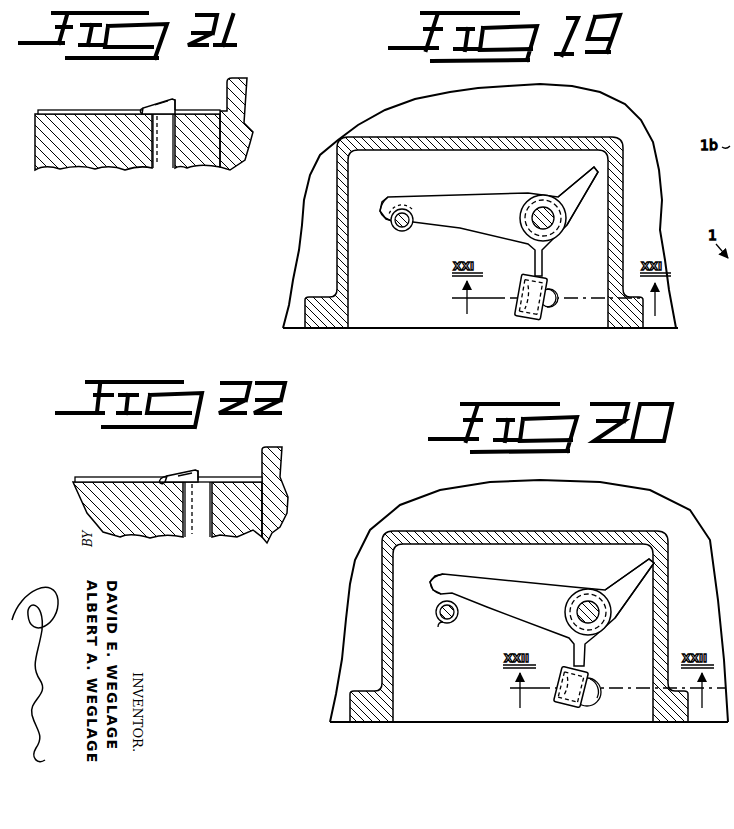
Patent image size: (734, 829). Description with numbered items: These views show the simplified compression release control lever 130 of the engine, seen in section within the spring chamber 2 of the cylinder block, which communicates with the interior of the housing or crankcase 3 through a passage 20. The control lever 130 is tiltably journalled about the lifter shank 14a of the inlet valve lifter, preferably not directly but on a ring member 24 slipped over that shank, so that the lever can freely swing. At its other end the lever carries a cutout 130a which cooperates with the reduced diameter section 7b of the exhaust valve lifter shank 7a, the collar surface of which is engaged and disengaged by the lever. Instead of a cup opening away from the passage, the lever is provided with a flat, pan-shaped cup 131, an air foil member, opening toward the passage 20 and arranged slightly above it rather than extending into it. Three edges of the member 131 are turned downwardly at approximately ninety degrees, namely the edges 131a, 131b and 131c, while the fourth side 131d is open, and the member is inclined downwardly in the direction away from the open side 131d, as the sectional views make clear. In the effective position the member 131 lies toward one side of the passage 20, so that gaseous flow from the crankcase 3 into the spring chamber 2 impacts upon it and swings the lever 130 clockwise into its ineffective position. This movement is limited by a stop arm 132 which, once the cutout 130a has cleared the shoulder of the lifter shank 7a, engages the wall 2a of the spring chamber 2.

In FIG. 19, the spring chamber 2 is at (400, 318).
In FIG. 20, the spring chamber 2 is at (529, 725).
In FIG. 19, the wall of spring chamber 2a is at (599, 208).
In FIG. 20, the wall of spring chamber 2a is at (519, 626).
In FIG. 21, the wall of spring chamber 2a is at (225, 82).
In FIG. 22, the wall of spring chamber 2a is at (263, 450).
In FIG. 21, the housing or crankcase 3 is at (103, 157).
In FIG. 22, the housing or crankcase 3 is at (157, 517).
In FIG. 19, the lifter shank 7a is at (395, 232).
In FIG. 20, the lifter shank 7a is at (425, 646).
In FIG. 19, the reduced diameter section 7b is at (405, 231).
In FIG. 20, the reduced diameter section 7b is at (455, 626).
In FIG. 19, the lifter shank 14a is at (540, 214).
In FIG. 20, the lifter shank 14a is at (588, 591).
In FIG. 19, the passage 20 is at (549, 307).
In FIG. 20, the passage 20 is at (595, 716).
In FIG. 21, the passage 20 is at (165, 160).
In FIG. 22, the passage 20 is at (202, 523).
In FIG. 19, the ring member 24 is at (563, 237).
In FIG. 20, the ring member 24 is at (604, 617).
In FIG. 19, the control lever 130 is at (455, 196).
In FIG. 20, the control lever 130 is at (530, 581).
In FIG. 21, the control lever 130 is at (67, 109).
In FIG. 22, the control lever 130 is at (92, 477).
In FIG. 19, the cutout 130a is at (396, 197).
In FIG. 20, the cutout 130a is at (436, 557).
In FIG. 19, the cup or air foil member 131 is at (509, 314).
In FIG. 20, the cup or air foil member 131 is at (550, 710).
In FIG. 21, the cup or air foil member 131 is at (169, 92).
In FIG. 22, the cup or air foil member 131 is at (187, 466).
In FIG. 19, the turned-down edge 131a is at (543, 278).
In FIG. 20, the turned-down edge 131a is at (597, 678).
In FIG. 21, the turned-down edge 131a is at (154, 104).
In FIG. 22, the turned-down edge 131a is at (178, 471).
In FIG. 19, the turned-down edge 131b is at (522, 282).
In FIG. 20, the turned-down edge 131b is at (545, 666).
In FIG. 21, the turned-down edge 131b is at (145, 110).
In FIG. 22, the turned-down edge 131b is at (163, 477).
In FIG. 19, the turned-down edge 131c is at (527, 318).
In FIG. 20, the turned-down edge 131c is at (564, 730).
In FIG. 19, the open side 131d is at (556, 294).
In FIG. 20, the open side 131d is at (631, 725).
In FIG. 21, the open side 131d is at (173, 104).
In FIG. 22, the open side 131d is at (199, 472).
In FIG. 19, the stop arm 132 is at (585, 170).
In FIG. 20, the stop arm 132 is at (629, 562).
In FIG. 21, the stop arm 132 is at (220, 163).
In FIG. 22, the stop arm 132 is at (248, 523).